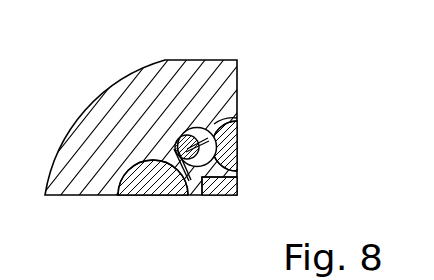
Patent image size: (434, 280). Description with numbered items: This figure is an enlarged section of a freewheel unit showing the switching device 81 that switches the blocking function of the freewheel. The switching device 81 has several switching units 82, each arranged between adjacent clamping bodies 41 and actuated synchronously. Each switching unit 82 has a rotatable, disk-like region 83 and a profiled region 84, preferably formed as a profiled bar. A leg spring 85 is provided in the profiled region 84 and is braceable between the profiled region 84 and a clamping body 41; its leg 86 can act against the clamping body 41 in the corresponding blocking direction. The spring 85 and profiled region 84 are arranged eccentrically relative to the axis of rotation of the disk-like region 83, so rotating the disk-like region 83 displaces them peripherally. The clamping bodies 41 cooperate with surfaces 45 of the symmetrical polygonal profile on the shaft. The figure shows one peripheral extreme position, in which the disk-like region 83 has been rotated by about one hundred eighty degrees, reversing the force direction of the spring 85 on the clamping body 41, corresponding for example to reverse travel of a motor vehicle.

The switching device 81 is at (172, 119).
The switching unit 82 is at (185, 127).
The disk-like region 83 is at (202, 128).
The profiled region 84 is at (236, 157).
The clamping body 41 is at (238, 122).
The surface 45 is at (237, 178).
The leg spring 85 is at (163, 170).
The leg 86 is at (178, 160).